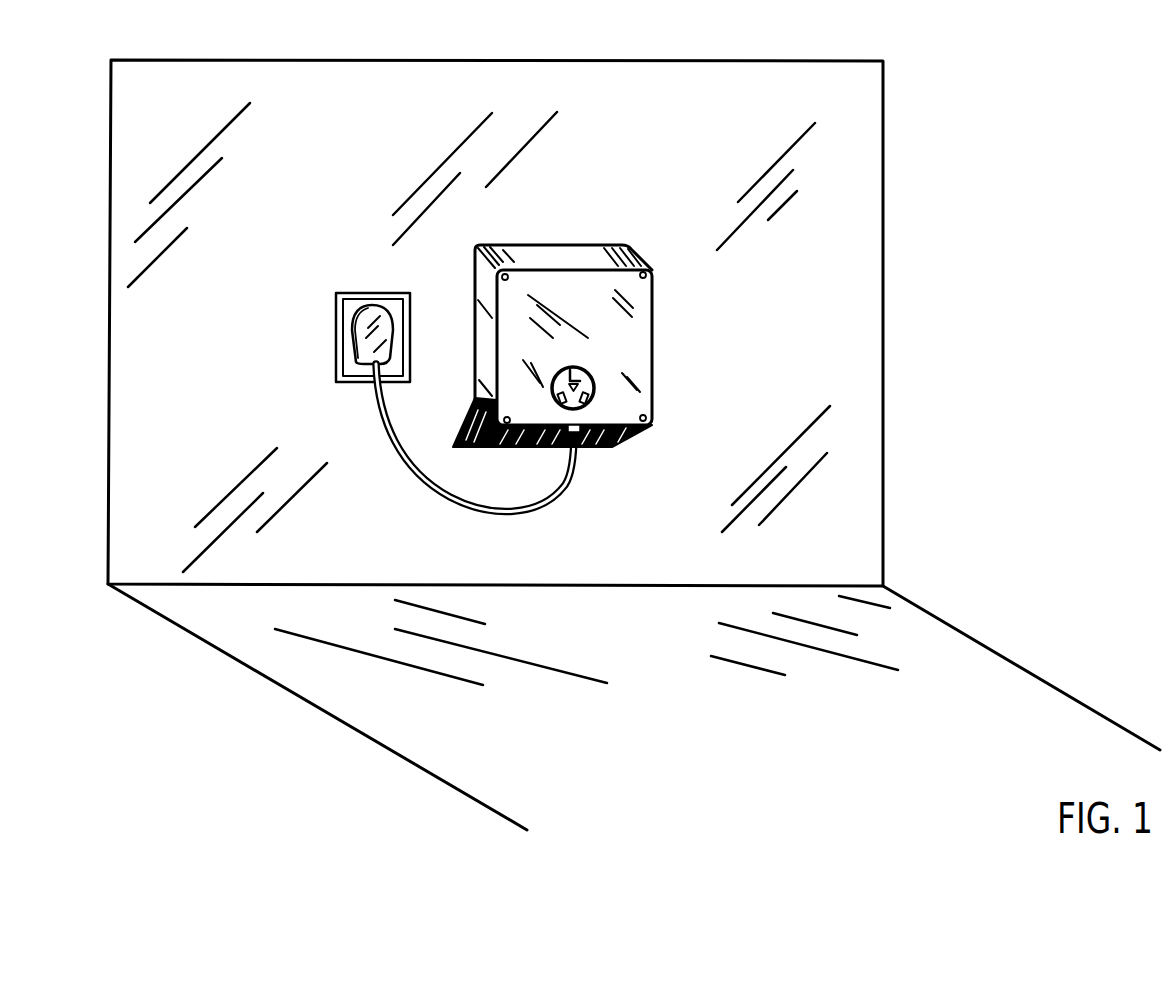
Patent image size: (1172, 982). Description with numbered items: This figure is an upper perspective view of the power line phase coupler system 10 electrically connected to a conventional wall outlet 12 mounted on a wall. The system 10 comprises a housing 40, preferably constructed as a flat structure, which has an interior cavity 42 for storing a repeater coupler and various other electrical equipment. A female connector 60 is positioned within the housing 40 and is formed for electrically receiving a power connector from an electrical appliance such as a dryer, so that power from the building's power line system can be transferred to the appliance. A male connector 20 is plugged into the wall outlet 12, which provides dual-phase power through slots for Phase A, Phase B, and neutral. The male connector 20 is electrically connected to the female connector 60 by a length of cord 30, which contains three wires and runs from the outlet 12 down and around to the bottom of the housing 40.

The power line phase coupler system 10 is at (964, 259).
The conventional wall outlet 12 is at (351, 302).
The male connector 20 is at (355, 330).
The cord 30 is at (583, 476).
The housing 40 is at (597, 279).
The interior cavity 42 is at (632, 345).
The female connector 60 is at (594, 377).